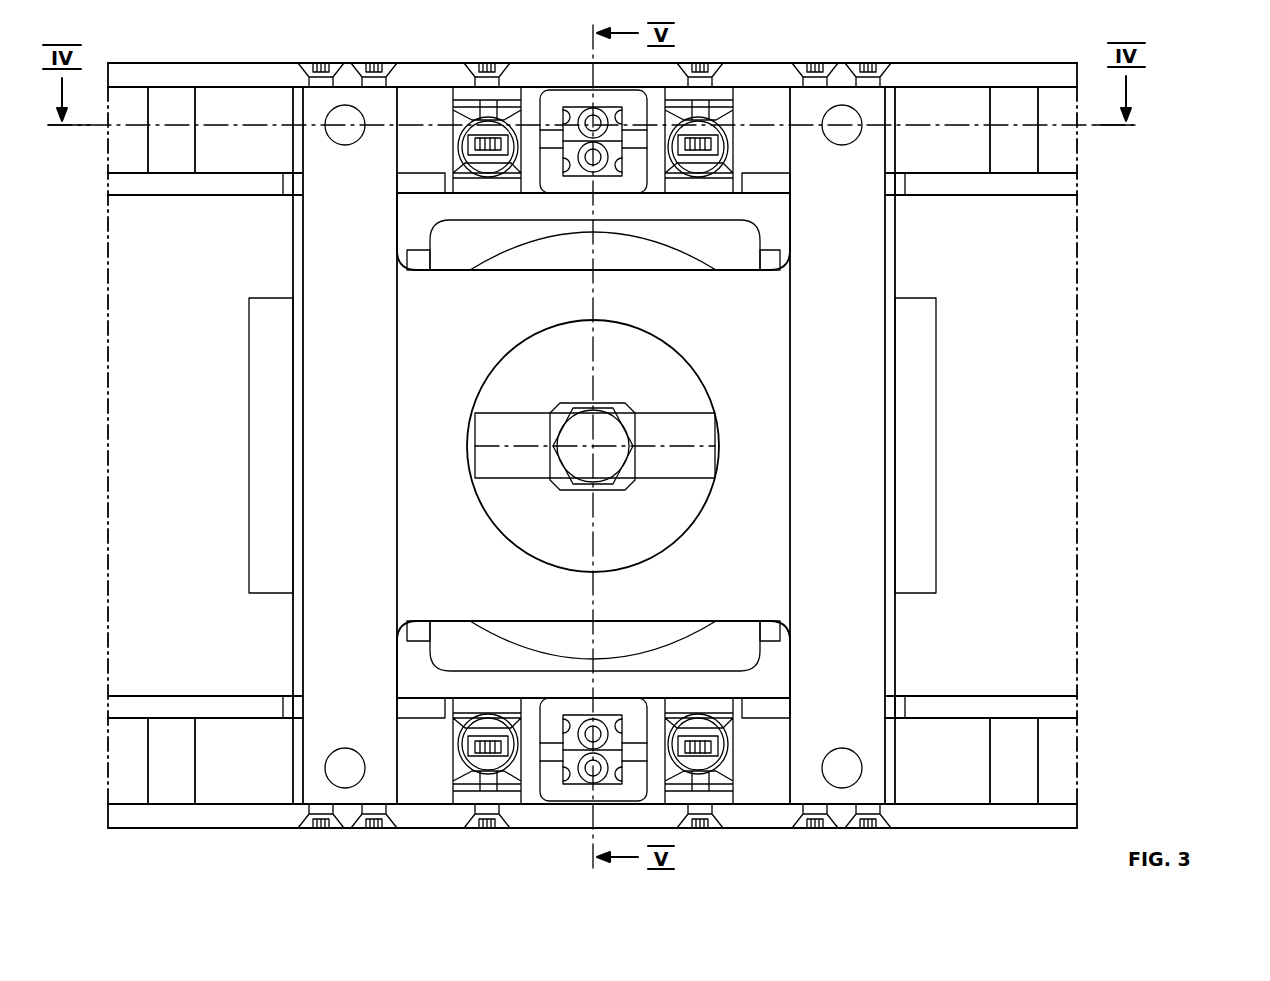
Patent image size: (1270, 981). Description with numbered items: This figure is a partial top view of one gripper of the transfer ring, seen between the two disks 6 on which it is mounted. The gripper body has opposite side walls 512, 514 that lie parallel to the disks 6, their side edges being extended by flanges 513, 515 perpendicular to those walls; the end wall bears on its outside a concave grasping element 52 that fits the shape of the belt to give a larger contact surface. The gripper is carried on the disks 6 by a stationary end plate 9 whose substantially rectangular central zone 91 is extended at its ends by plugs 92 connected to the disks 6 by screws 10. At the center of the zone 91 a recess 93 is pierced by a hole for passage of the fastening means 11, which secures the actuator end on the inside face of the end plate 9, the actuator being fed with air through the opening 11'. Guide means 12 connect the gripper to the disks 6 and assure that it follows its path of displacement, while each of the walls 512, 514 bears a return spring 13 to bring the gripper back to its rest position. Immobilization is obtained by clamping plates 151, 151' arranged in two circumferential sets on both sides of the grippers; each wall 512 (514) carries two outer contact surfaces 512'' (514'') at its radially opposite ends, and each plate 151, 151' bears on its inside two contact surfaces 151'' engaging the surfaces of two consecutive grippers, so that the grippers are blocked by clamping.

The disk 6 is at (988, 66).
The stationary end plate 9 is at (895, 275).
The screw 10 is at (387, 829).
The fastening means 11 is at (601, 418).
The opening 11' is at (630, 433).
The guide means 12 is at (567, 89).
The return spring 13 is at (728, 150).
The grasping element 52 is at (923, 486).
The central zone 91 is at (863, 373).
The plug 92 is at (313, 787).
The recess 93 is at (670, 530).
The clamping plate 151 is at (593, 165).
The clamping plate 151' is at (593, 720).
The contact surface 151'' is at (600, 450).
The side wall 512 is at (567, 140).
The contact surface 512'' is at (600, 198).
The flange 513 is at (420, 240).
The side wall 514 is at (577, 750).
The contact surface 514'' is at (600, 673).
The flange 515 is at (418, 650).